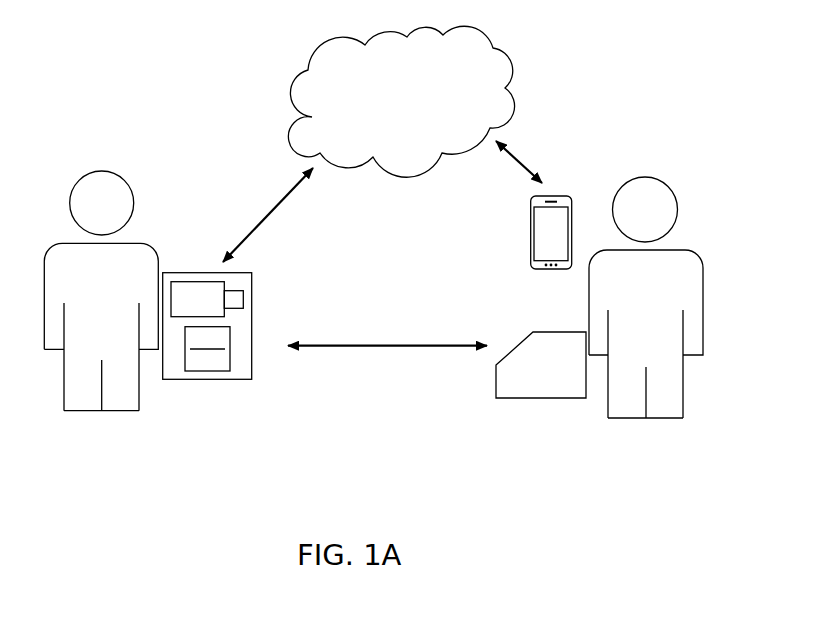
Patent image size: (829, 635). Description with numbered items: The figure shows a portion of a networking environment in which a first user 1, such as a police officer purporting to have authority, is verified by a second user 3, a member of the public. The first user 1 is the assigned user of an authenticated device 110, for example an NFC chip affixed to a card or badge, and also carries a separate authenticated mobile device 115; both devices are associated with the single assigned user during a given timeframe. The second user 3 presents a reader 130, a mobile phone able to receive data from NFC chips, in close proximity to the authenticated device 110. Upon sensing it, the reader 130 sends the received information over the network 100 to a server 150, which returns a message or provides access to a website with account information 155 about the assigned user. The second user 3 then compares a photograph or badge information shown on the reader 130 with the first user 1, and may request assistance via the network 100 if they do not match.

The network 100 is at (587, 108).
The first user 1 is at (703, 298).
The second user 3 is at (161, 259).
The authenticated device 110 is at (541, 365).
The authenticated mobile device 115 is at (551, 251).
The reader 130 is at (225, 342).
The server 150 is at (401, 101).
The account information 155 is at (207, 299).